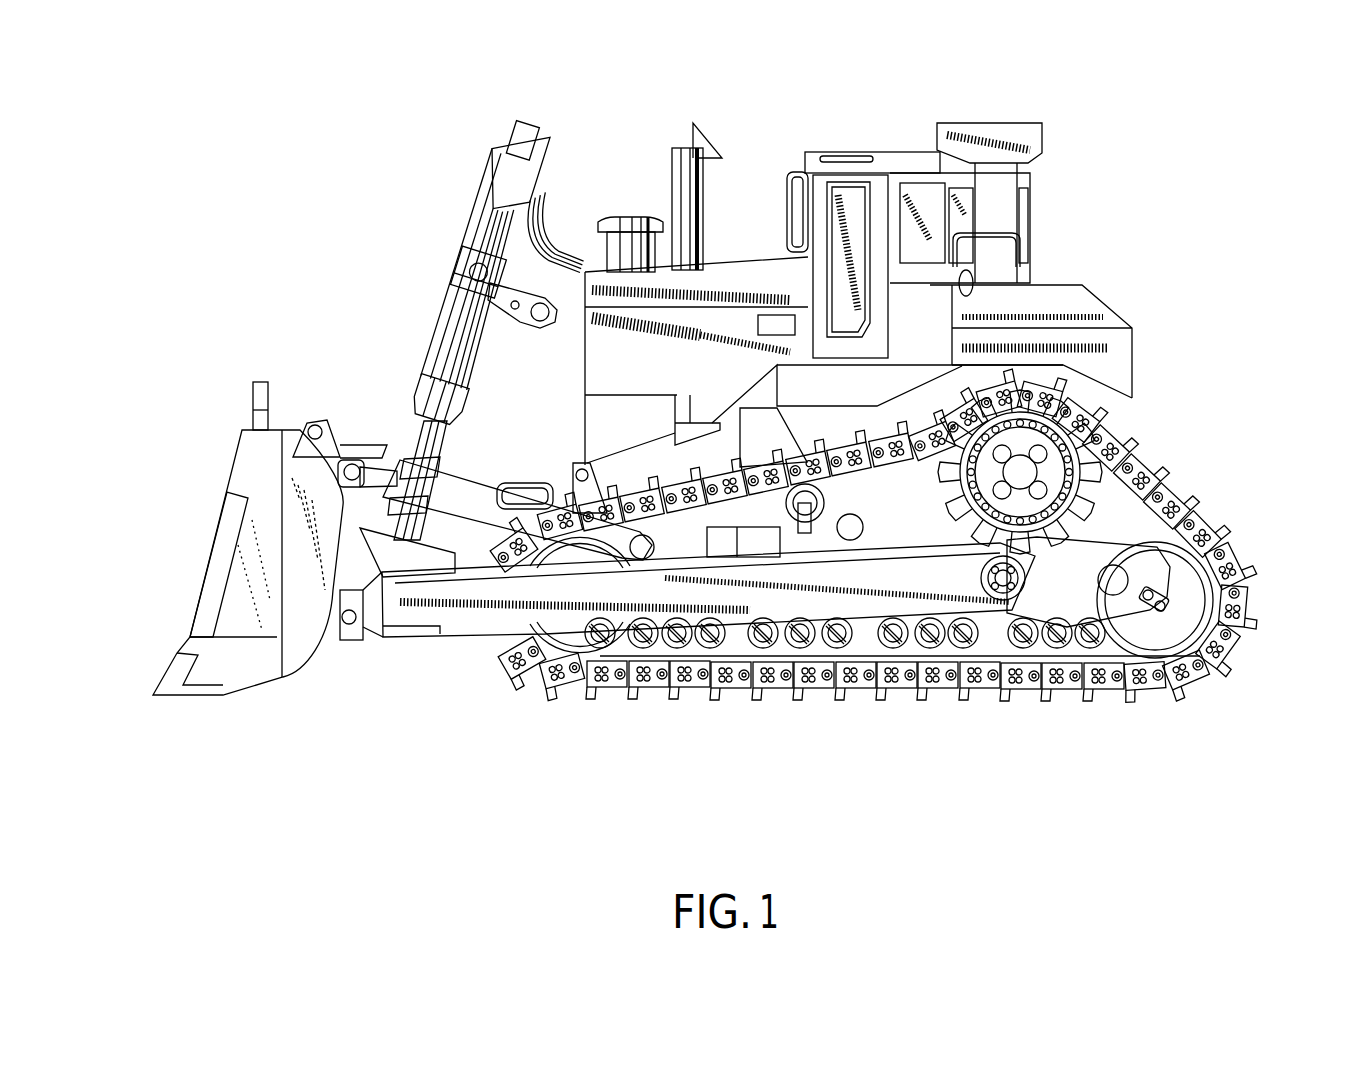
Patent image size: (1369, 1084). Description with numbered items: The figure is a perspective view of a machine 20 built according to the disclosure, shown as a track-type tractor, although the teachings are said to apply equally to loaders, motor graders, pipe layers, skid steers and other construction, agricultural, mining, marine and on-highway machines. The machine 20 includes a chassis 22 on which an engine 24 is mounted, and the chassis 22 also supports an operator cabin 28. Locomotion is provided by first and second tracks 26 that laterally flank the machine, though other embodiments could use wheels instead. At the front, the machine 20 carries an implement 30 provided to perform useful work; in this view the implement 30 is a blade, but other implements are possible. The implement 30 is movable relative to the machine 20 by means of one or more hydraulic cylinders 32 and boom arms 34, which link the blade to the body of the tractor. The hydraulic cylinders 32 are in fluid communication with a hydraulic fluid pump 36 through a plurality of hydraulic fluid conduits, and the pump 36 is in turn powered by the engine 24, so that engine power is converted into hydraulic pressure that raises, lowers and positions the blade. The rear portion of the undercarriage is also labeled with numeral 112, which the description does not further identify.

The machine 20 is at (462, 176).
The chassis 22 is at (910, 480).
The engine 24 is at (656, 382).
The tracks 26 is at (670, 691).
The operator cabin 28 is at (870, 177).
The implement 30 is at (212, 540).
The hydraulic cylinder 32 is at (473, 228).
The boom arm 34 is at (470, 625).
The hydraulic fluid pump 36 is at (777, 323).
The rear idler / bogie assembly 112 is at (1080, 522).